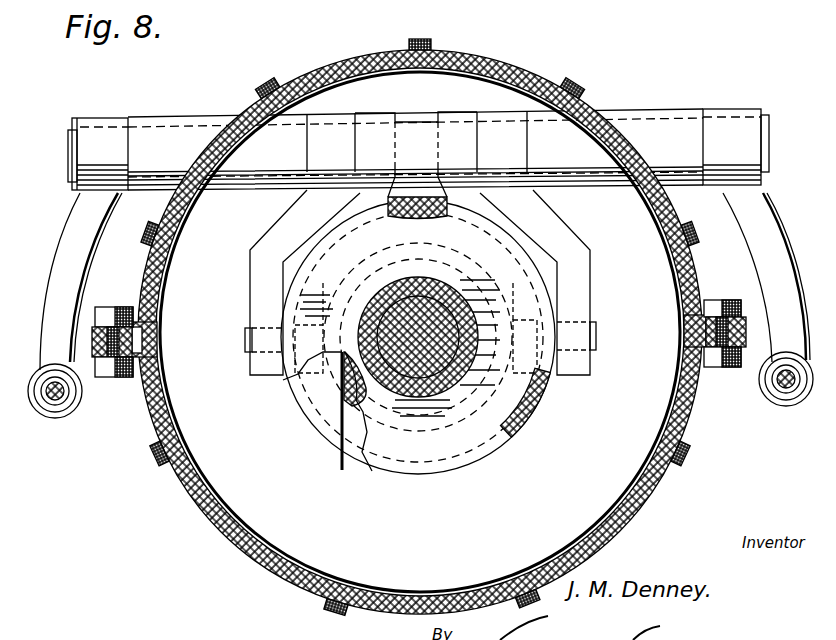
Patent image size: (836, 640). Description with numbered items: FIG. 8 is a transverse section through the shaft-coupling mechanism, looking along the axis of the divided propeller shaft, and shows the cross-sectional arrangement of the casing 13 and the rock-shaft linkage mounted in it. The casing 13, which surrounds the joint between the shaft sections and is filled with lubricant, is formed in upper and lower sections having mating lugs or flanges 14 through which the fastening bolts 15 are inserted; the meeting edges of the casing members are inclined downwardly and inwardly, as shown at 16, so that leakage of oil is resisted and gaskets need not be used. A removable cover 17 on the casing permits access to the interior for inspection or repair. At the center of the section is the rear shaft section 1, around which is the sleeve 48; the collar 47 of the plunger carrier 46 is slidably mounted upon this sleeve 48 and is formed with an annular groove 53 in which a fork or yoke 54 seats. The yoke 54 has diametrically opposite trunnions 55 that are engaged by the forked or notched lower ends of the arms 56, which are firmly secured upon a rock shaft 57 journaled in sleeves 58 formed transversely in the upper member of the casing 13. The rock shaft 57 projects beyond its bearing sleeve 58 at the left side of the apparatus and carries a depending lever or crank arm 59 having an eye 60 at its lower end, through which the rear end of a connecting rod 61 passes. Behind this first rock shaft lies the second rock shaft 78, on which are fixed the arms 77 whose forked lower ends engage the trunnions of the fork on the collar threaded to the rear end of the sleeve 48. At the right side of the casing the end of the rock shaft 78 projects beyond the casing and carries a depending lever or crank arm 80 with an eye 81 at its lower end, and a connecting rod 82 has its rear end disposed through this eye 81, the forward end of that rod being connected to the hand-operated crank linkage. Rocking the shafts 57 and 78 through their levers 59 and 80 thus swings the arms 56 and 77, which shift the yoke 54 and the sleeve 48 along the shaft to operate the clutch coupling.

The shaft 1 is at (416, 372).
The casing 13 is at (178, 465).
The mating lugs or flanges 14 is at (62, 385).
The fastening bolts 15 is at (112, 307).
The inclined meeting edges 16 is at (150, 338).
The removable cover 17 is at (498, 63).
The carrier 46 is at (416, 223).
The collar 47 is at (467, 460).
The sleeve 48 is at (460, 400).
The annular groove 53 is at (360, 452).
The fork or yoke 54 is at (325, 416).
The trunnions 55 is at (600, 338).
The arms 56 is at (256, 285).
The rock shaft 57 is at (414, 133).
The sleeves 58 is at (188, 130).
The depending lever or crank arm 59 is at (775, 244).
The eye 60 is at (793, 407).
The connecting rod 61 is at (770, 396).
The arms 77 is at (358, 200).
The rock shaft 78 is at (72, 131).
The depending lever or crank arm 80 is at (66, 240).
The eye 81 is at (48, 418).
The connecting rod 82 is at (70, 418).